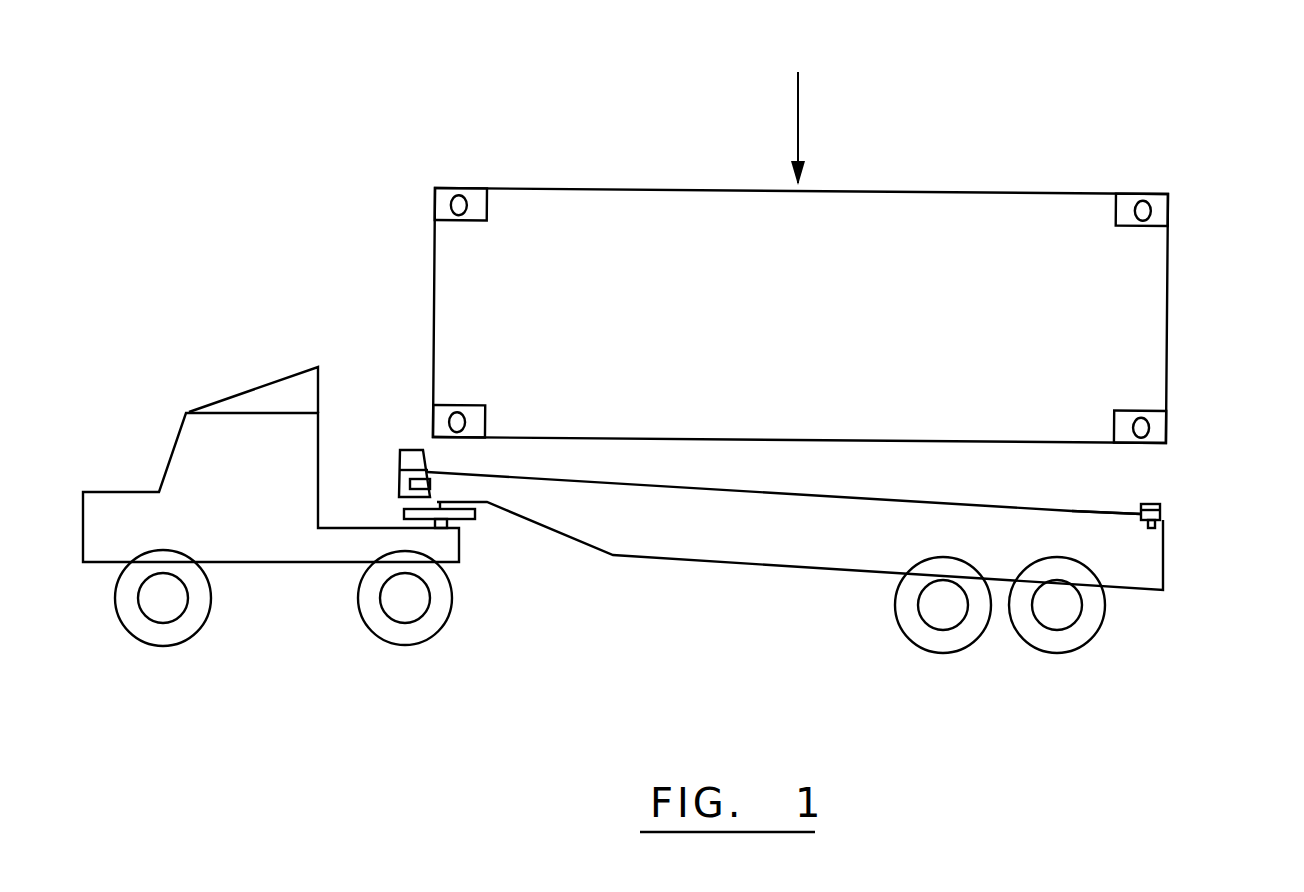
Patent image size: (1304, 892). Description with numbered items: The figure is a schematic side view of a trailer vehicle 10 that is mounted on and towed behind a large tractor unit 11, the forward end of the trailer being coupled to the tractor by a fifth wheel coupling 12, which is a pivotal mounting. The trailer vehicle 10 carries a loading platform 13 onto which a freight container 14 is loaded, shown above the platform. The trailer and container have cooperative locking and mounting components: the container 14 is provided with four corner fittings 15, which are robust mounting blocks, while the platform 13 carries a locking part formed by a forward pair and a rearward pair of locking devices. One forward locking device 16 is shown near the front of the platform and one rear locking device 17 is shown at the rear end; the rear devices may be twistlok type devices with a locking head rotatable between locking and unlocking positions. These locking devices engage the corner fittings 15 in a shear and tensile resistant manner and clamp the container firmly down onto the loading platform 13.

The trailer vehicle 10 is at (755, 573).
The tractor unit 11 is at (227, 375).
The fifth wheel coupling 12 is at (412, 512).
The loading platform 13 is at (1077, 508).
The freight container 14 is at (963, 278).
The corner fittings 15 is at (475, 413).
The forward locking device 16 is at (417, 470).
The rear locking device 17 is at (1162, 510).